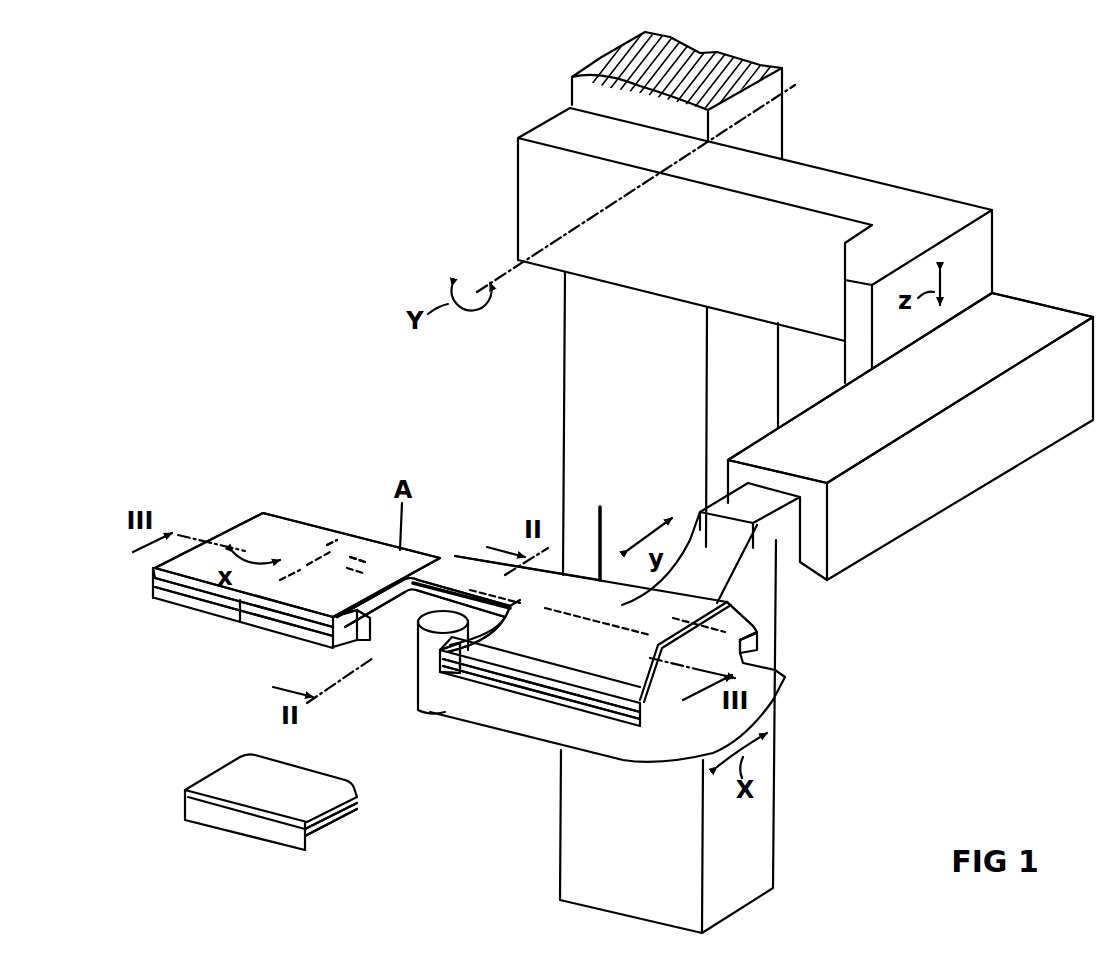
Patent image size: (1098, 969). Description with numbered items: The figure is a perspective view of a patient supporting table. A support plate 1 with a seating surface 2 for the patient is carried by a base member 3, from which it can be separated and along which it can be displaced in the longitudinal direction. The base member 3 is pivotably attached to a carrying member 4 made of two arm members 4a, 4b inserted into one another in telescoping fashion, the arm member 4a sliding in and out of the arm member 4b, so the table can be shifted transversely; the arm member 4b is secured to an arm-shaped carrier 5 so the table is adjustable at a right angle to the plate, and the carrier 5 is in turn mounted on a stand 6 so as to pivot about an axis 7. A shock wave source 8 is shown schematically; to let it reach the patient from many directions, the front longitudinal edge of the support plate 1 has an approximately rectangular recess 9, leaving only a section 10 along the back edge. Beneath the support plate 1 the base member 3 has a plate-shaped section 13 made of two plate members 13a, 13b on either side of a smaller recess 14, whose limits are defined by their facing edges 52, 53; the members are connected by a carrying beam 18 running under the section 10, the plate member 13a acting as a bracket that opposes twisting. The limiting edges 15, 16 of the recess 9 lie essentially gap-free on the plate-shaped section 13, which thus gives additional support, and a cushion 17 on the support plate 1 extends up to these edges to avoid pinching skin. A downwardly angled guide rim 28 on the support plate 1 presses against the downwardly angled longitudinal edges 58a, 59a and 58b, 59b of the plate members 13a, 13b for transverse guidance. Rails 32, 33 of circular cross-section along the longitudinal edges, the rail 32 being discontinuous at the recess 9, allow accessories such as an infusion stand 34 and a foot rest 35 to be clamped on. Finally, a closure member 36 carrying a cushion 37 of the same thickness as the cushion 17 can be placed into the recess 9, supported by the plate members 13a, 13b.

The support plate 1 is at (247, 530).
The seating surface 2 is at (285, 525).
The base member 3 is at (598, 747).
The carrying member 4 is at (957, 505).
The arm member 4a is at (780, 572).
The arm member 4b is at (1020, 447).
The arm-shaped carrier 5 is at (880, 187).
The stand 6 is at (768, 128).
The axis 7 is at (503, 293).
The shock wave source 8 is at (420, 695).
The recess 9 is at (410, 557).
The section 10 is at (440, 557).
The plate-shaped section 13 is at (385, 630).
The plate member 13a is at (395, 570).
The plate member 13b is at (470, 660).
The recess 14 is at (465, 565).
The limiting edge 15 is at (367, 598).
The limiting edge 16 is at (535, 612).
The cushion 17 is at (152, 569).
The carrying beam 18 is at (530, 572).
The guide rim 28 is at (527, 733).
The rail 32 is at (557, 700).
The rail 33 is at (760, 646).
The infusion stand 34 is at (603, 508).
The foot rest 35 is at (729, 620).
The closure member 36 is at (335, 818).
The cushion 37 is at (350, 810).
The edge 52 is at (335, 610).
The edge 53 is at (490, 632).
The longitudinal edge 58a is at (355, 660).
The longitudinal edge 58b is at (443, 703).
The longitudinal edge 59a is at (343, 540).
The longitudinal edge 59b is at (673, 617).